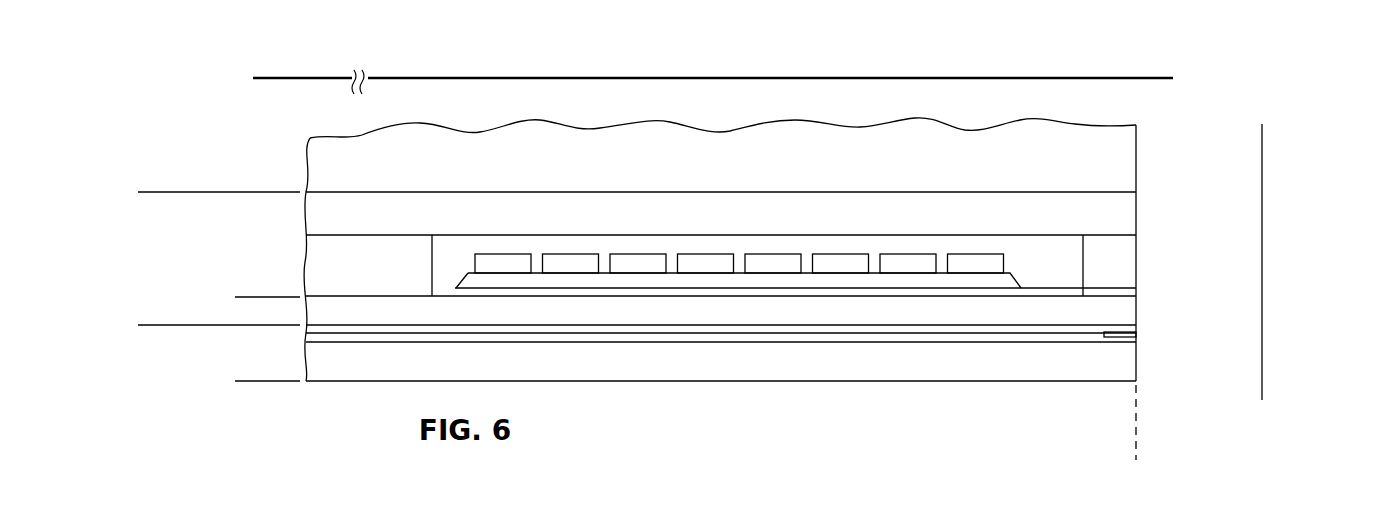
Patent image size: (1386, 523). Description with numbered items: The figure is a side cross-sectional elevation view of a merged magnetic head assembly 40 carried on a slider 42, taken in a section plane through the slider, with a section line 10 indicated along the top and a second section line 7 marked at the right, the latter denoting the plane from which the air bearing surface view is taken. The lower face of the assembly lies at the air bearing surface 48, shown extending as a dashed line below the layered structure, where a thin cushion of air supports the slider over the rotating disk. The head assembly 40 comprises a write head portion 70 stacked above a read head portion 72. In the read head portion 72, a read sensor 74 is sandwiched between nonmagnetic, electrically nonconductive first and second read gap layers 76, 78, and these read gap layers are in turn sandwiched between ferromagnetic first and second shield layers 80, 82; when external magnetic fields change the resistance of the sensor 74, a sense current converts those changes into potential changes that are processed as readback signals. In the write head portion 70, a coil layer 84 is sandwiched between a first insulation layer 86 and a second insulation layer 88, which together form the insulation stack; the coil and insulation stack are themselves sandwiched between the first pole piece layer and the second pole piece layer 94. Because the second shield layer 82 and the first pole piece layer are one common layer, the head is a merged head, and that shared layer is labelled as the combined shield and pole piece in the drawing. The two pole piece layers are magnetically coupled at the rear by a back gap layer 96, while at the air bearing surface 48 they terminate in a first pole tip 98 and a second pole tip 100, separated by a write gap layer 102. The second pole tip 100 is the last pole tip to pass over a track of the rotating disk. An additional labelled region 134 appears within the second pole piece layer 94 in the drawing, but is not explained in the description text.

The section line of magnetic head assembly 10 is at (262, 66).
The section line of pole tip region 7 is at (1275, 133).
The magnetic head 40 is at (282, 146).
The slider 42 is at (1136, 152).
The air bearing surface 48 is at (1136, 455).
The write head portion 70 is at (252, 284).
The read head portion 72 is at (252, 425).
The read sensor 74 is at (1136, 336).
The first read gap layer 76 is at (790, 343).
The second read gap layer 78 is at (753, 326).
The first shield layer 80 is at (867, 367).
The second shield layer 82 is at (975, 315).
The coil layer 84 is at (778, 262).
The first insulation layer 86 is at (637, 285).
The second insulation layer 88 is at (540, 247).
The second pole piece layer 94 is at (906, 180).
The back gap layer 96 is at (379, 247).
The first pole tip 98 is at (1136, 311).
The second pole tip 100 is at (1136, 245).
The write gap layer 102 is at (1136, 292).
The yoke portion of second pole piece 134 is at (998, 203).